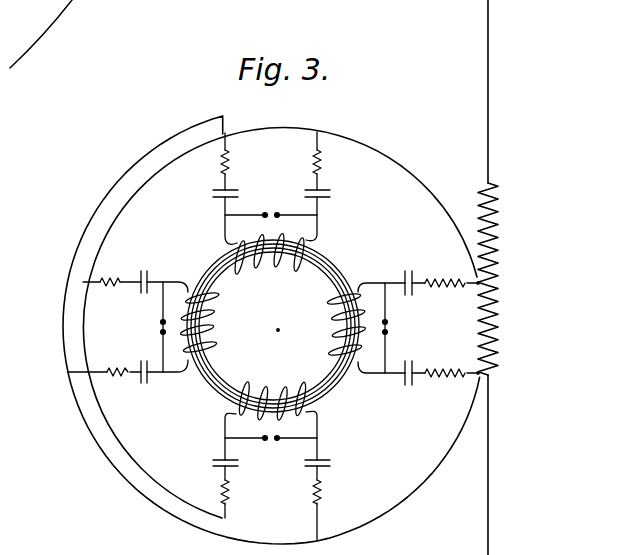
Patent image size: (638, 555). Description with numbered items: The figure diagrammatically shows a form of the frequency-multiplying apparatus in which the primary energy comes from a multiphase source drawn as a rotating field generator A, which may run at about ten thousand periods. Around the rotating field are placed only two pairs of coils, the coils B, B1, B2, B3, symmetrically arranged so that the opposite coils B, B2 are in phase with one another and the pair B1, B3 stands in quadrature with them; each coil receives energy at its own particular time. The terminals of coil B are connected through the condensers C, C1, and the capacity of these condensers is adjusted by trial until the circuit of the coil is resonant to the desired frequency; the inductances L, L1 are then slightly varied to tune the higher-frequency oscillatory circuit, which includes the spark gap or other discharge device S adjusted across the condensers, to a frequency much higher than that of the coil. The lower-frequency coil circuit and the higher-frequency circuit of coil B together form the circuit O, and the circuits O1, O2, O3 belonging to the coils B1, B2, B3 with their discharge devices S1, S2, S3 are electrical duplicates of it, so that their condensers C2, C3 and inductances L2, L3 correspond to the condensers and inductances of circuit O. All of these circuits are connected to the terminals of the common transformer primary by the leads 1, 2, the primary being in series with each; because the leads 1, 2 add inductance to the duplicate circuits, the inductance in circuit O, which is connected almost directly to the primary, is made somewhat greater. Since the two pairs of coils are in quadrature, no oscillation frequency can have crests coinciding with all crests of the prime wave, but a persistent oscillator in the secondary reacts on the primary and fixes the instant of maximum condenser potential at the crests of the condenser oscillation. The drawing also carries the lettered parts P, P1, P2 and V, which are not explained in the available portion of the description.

The lead 1 is at (118, 181).
The lead 2 is at (140, 185).
The rotating field generator A is at (273, 326).
The coil B is at (346, 324).
The coil B1 is at (272, 397).
The coil B2 is at (207, 322).
The coil B3 is at (269, 258).
The condenser C is at (407, 271).
The condenser C1 is at (411, 383).
The condenser C2 is at (152, 382).
The condenser C3 is at (150, 272).
The inductance L is at (445, 271).
The inductance L1 is at (445, 386).
The inductance / resistance L2 is at (117, 385).
The inductance / resistance L3 is at (110, 269).
The oscillatory circuit O is at (418, 328).
The oscillatory circuit O1 is at (128, 327).
The oscillatory circuit O2 is at (271, 476).
The oscillatory circuit O3 is at (271, 188).
The spark gap or discharge device S is at (450, 290).
The discharge device S1 is at (152, 327).
The discharge device S2 is at (271, 451).
The discharge device S3 is at (271, 203).
The potentiometer tap P is at (497, 279).
The potentiometer tap P1 is at (505, 284).
The potentiometer tap P2 is at (499, 374).
The voltage supply lead V is at (506, 277).